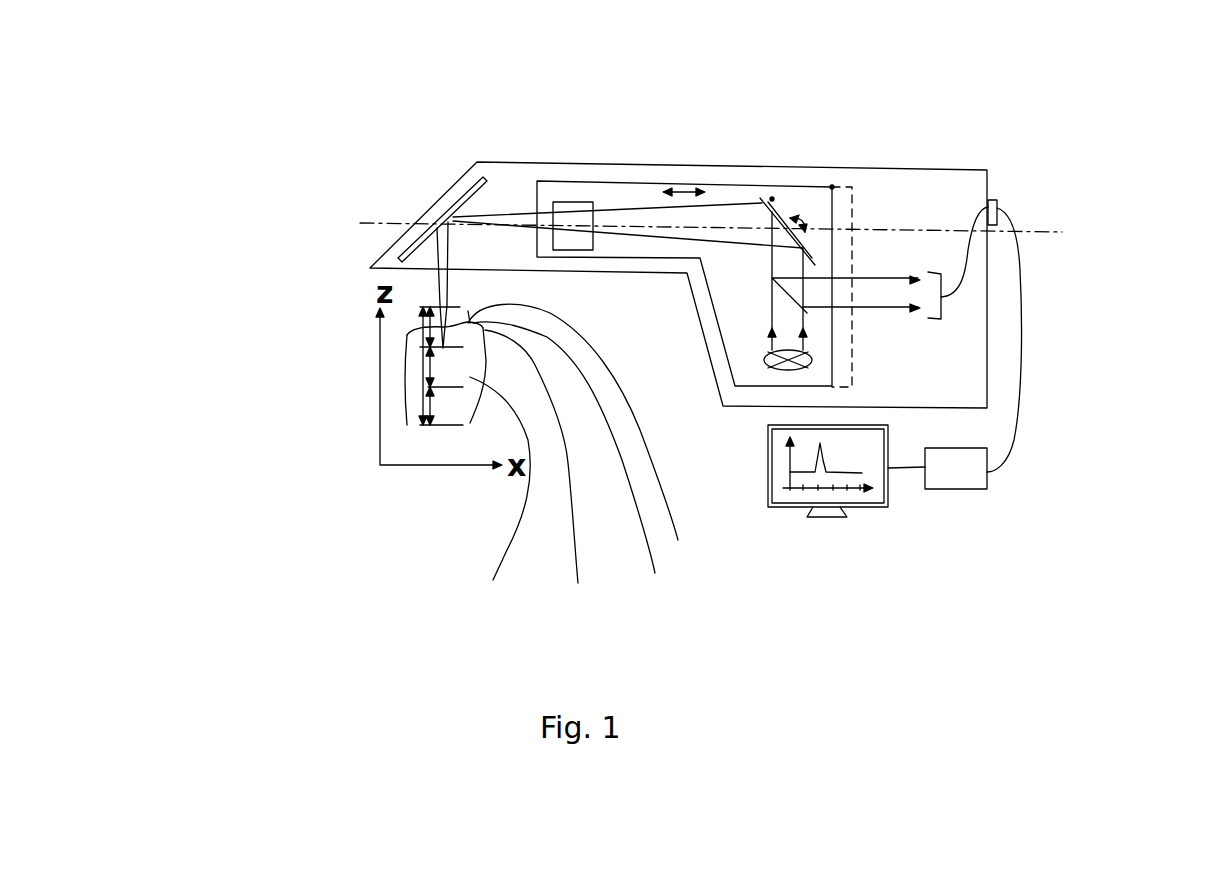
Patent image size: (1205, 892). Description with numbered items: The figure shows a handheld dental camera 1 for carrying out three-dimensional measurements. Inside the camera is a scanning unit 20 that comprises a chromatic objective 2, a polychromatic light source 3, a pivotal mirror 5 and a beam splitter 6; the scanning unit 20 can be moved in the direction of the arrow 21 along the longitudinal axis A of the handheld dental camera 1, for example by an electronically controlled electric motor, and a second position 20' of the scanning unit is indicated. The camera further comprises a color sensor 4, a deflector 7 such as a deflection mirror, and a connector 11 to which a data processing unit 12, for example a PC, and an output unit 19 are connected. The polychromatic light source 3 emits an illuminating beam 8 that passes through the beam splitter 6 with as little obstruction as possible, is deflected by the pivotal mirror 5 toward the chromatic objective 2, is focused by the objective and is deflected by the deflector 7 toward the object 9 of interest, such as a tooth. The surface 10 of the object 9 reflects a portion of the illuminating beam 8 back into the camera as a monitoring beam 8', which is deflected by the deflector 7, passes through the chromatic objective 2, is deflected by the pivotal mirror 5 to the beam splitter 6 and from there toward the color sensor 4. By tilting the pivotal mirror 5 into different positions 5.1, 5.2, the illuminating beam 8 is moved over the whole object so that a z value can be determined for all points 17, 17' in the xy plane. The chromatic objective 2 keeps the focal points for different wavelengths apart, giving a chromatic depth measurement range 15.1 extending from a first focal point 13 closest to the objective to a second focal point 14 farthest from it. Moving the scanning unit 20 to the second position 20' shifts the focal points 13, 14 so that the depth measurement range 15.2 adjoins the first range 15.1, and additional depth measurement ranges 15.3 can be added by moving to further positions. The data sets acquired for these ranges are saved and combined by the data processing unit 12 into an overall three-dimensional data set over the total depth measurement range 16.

The handheld dental camera 1 is at (488, 162).
The longitudinal axis A is at (363, 222).
The chromatic objective 2 is at (562, 202).
The polychromatic light source 3 is at (813, 358).
The color sensor 4 is at (940, 305).
The pivotal mirror 5 is at (803, 213).
The first mirror position 5.1 is at (762, 198).
The second mirror position 5.2 is at (773, 196).
The beam splitter 6 is at (765, 272).
The deflector 7 is at (465, 185).
The illuminating beam 8 is at (994, 299).
The monitoring beam 8' is at (852, 194).
The object of interest 9 is at (500, 502).
The surface 10 is at (593, 440).
The connector 11 is at (998, 203).
The data processing unit 12 is at (987, 483).
The first focal point 13 is at (430, 305).
The second focal point 14 is at (415, 337).
The first chromatic depth measurement range 15.1 is at (425, 325).
The second depth measurement range 15.2 is at (423, 372).
The additional depth measurement range 15.3 is at (425, 410).
The total depth measurement range 16 is at (422, 422).
The point in the xy plane 17 is at (543, 478).
The further point in the xy plane 17' is at (579, 473).
The output unit 19 is at (878, 508).
The scanning unit 20 is at (685, 230).
The second position of the scanning unit 20' is at (877, 223).
The arrow 21 is at (685, 188).